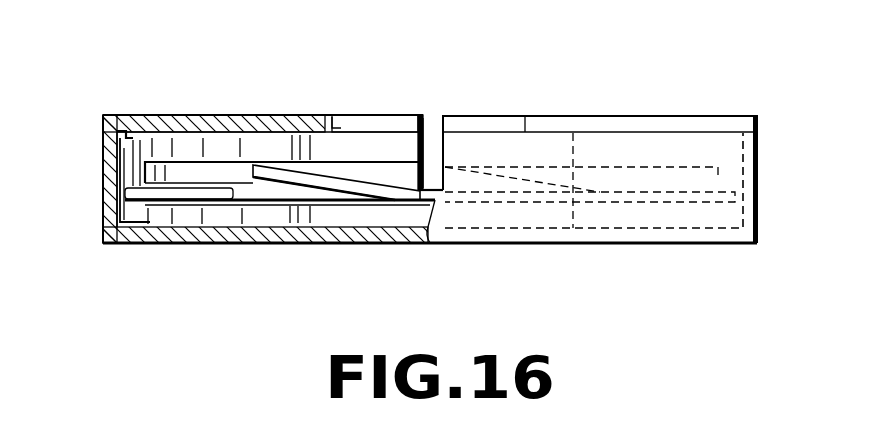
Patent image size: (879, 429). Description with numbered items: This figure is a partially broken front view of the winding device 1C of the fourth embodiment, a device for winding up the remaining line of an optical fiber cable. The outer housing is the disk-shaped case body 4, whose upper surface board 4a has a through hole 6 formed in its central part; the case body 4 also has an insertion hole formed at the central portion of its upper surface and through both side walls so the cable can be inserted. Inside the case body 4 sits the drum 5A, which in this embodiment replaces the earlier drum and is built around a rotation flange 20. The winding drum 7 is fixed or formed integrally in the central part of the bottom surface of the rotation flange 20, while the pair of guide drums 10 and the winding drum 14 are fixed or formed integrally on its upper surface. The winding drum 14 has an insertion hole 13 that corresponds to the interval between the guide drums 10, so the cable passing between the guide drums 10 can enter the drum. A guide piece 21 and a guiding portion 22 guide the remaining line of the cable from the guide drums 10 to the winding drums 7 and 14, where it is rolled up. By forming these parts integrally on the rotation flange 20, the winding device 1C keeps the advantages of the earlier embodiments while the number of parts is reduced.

The winding device 1C is at (652, 91).
The case body 4 is at (556, 247).
The upper surface board 4a is at (193, 113).
The drum 5A is at (172, 152).
The through hole 6 is at (340, 114).
The winding drum 7 is at (328, 213).
The guide drums 10 is at (148, 170).
The insertion hole 13 is at (426, 148).
The winding drum 14 is at (268, 113).
The rotation flange 20 is at (147, 226).
The guide piece 21 is at (495, 177).
The guiding portion 22 is at (247, 205).